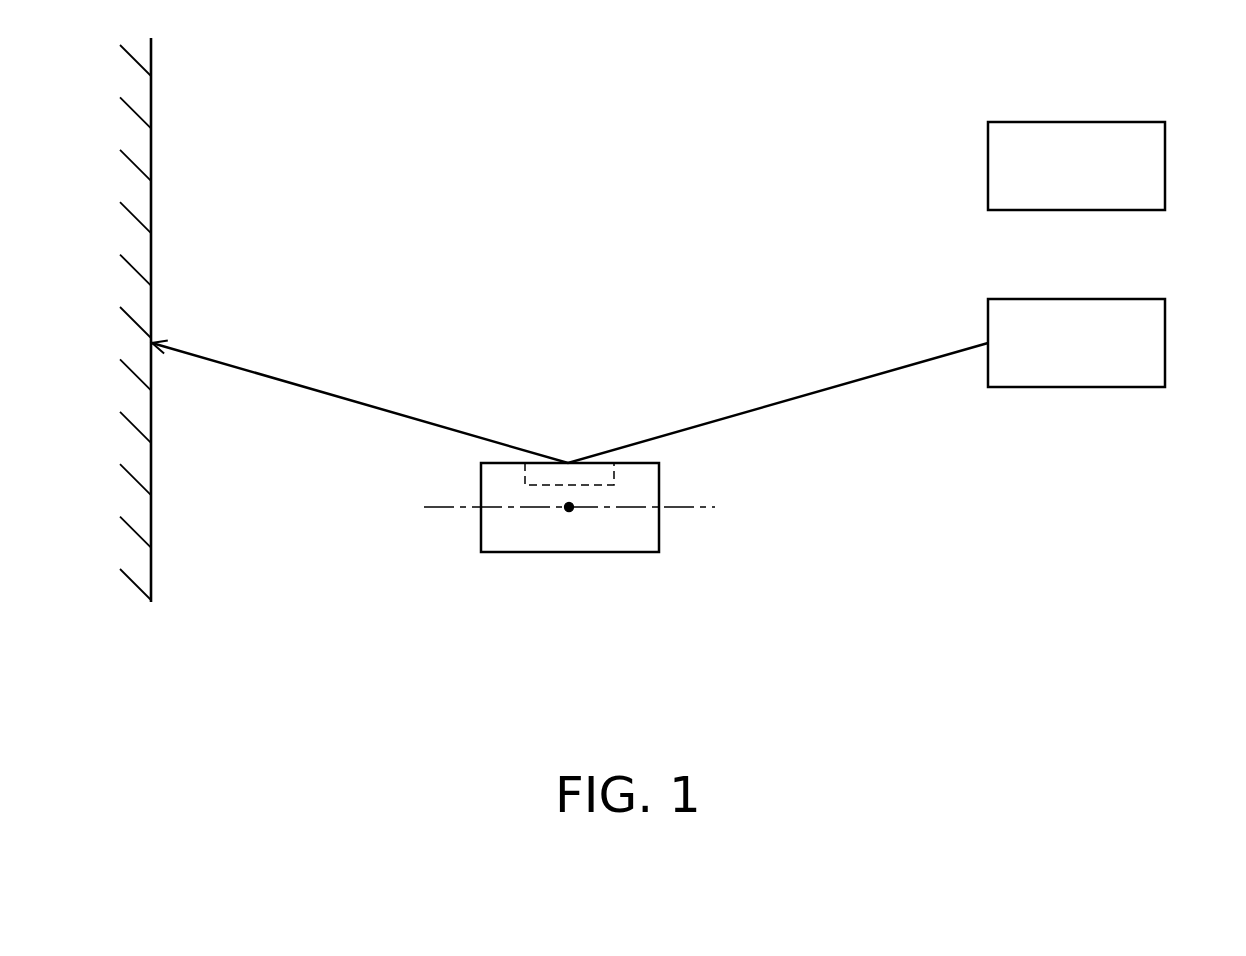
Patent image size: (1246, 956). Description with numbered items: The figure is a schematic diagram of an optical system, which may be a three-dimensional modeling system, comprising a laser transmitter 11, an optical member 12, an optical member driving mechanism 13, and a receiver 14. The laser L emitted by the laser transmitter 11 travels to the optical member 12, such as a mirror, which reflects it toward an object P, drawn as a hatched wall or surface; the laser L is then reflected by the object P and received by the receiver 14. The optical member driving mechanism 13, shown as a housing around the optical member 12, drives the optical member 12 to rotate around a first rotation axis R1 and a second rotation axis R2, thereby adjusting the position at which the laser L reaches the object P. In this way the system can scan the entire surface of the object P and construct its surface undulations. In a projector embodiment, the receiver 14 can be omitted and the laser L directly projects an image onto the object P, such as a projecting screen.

The object P is at (153, 147).
The laser L is at (780, 400).
The receiver 14 is at (1143, 166).
The laser transmitter 11 is at (1143, 343).
The optical member driving mechanism 13 is at (626, 537).
The optical member 12 is at (614, 474).
The second rotation axis R2 is at (432, 510).
The first rotation axis R1 is at (569, 512).